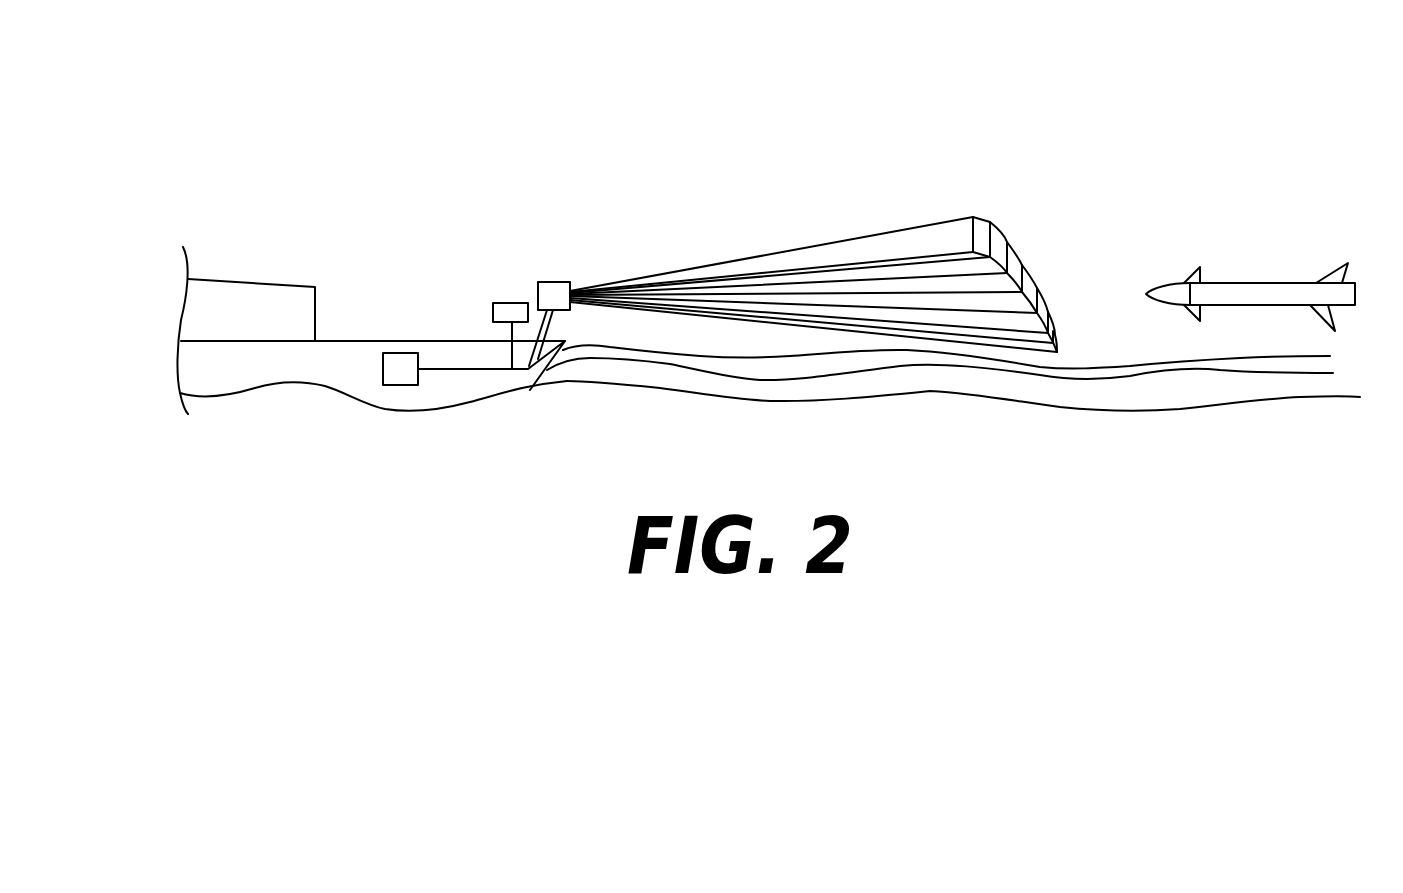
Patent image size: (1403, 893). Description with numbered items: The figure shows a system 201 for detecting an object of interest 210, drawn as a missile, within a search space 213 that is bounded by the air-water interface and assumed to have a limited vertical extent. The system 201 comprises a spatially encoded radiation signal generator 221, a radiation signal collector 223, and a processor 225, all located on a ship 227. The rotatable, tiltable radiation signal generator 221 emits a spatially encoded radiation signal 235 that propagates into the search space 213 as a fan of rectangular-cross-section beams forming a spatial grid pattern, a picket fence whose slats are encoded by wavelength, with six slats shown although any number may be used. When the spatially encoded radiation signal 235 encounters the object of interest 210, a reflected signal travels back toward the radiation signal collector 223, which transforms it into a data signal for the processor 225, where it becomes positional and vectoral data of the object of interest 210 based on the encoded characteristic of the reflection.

The system 201 is at (658, 237).
The object of interest 210 is at (1274, 283).
The search space 213 is at (1066, 70).
The spatially encoded radiation signal generator 221 is at (552, 281).
The radiation signal collector 223 is at (497, 302).
The processor 225 is at (428, 403).
The ship 227 is at (233, 378).
The spatially encoded radiation signal 235 is at (877, 234).